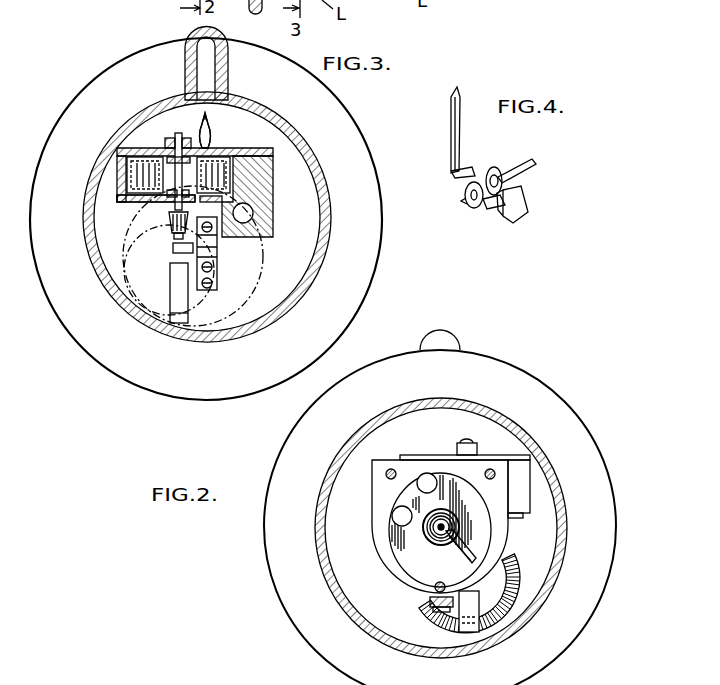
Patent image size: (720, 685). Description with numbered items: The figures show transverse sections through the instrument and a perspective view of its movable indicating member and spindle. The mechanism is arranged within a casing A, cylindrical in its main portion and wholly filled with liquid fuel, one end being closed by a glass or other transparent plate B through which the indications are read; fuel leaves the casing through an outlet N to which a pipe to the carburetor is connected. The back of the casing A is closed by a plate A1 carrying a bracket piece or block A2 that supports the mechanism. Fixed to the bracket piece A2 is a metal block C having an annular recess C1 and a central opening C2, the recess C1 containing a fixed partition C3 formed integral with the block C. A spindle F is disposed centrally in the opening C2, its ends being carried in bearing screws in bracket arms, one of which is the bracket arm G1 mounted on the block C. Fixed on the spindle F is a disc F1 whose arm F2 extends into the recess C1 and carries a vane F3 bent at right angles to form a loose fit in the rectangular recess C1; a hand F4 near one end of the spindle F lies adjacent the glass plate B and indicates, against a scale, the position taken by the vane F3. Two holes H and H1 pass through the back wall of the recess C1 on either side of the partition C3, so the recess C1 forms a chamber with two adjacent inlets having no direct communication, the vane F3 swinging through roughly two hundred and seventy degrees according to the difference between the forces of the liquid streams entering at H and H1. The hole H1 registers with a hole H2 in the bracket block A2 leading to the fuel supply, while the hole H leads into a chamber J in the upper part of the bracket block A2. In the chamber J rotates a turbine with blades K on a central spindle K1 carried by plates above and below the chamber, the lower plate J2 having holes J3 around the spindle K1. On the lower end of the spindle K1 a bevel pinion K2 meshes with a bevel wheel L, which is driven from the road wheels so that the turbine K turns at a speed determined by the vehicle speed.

In FIG. 3, the bevel wheel L is at (137, 301).
In FIG. 2, the bevel wheel L is at (566, 628).
In FIG. 3, the outlet N is at (187, 44).
In FIG. 3, the glass or other transparent plate B is at (175, 133).
In FIG. 3, the chamber J is at (121, 172).
In FIG. 3, the plate J2 is at (127, 206).
In FIG. 3, the holes J3 is at (172, 222).
In FIG. 3, the turbine blades K is at (130, 178).
In FIG. 3, the central spindle K1 is at (160, 163).
In FIG. 3, the bevel pinion K2 is at (180, 236).
In FIG. 2, the casing A is at (466, 470).
In FIG. 2, the plate A1 is at (408, 420).
In FIG. 3, the bracket piece or block A2 is at (263, 177).
In FIG. 3, the hole H is at (263, 150).
In FIG. 2, the hole H is at (427, 472).
In FIG. 2, the hole H1 is at (393, 508).
In FIG. 3, the hole H2 is at (243, 213).
In FIG. 3, the metal piece or block C is at (260, 245).
In FIG. 2, the metal piece or block C is at (475, 493).
In FIG. 2, the annular recess C1 is at (478, 505).
In FIG. 2, the central opening C2 is at (477, 500).
In FIG. 2, the fixed partition C3 is at (414, 499).
In FIG. 3, the bracket arm G1 is at (230, 270).
In FIG. 4, the spindle F is at (527, 160).
In FIG. 2, the spindle F is at (425, 530).
In FIG. 4, the disc F1 is at (493, 167).
In FIG. 2, the disc F1 is at (440, 541).
In FIG. 4, the arm F2 is at (498, 201).
In FIG. 2, the arm F2 is at (478, 553).
In FIG. 4, the vane F3 is at (520, 214).
In FIG. 2, the vane F3 is at (528, 588).
In FIG. 3, the hand F4 is at (228, 119).
In FIG. 4, the hand F4 is at (452, 102).